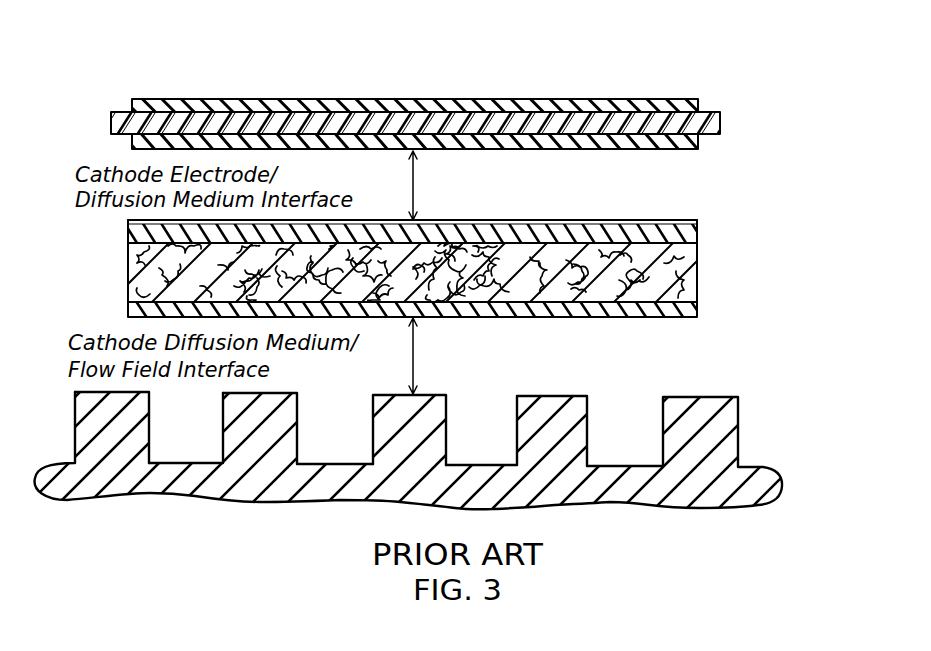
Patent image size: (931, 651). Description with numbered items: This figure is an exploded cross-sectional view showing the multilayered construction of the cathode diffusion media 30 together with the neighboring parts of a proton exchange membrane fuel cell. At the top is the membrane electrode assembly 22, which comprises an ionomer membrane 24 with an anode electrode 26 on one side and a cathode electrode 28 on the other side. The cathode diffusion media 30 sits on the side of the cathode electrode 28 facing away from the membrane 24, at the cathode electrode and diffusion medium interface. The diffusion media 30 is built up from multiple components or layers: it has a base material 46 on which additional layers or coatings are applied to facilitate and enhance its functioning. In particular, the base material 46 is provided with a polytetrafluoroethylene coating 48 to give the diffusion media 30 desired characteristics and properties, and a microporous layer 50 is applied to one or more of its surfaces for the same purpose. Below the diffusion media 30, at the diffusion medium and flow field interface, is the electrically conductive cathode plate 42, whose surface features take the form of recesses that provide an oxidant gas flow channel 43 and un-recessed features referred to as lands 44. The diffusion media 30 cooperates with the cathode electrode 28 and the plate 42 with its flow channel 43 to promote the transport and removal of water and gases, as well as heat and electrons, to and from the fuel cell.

The membrane electrode assembly 22 is at (448, 118).
The ionomer membrane 24 is at (225, 128).
The anode electrode 26 is at (612, 107).
The cathode electrode 28 is at (545, 148).
The cathode diffusion media 30 is at (424, 260).
The plate 42 is at (465, 461).
The oxidant gas flow channel 43 is at (186, 443).
The lands 44 is at (400, 458).
The base material 46 is at (683, 287).
The polytetrafluoroethylene (PTFE) coating 48 is at (700, 237).
The microporous layer 50 is at (518, 221).